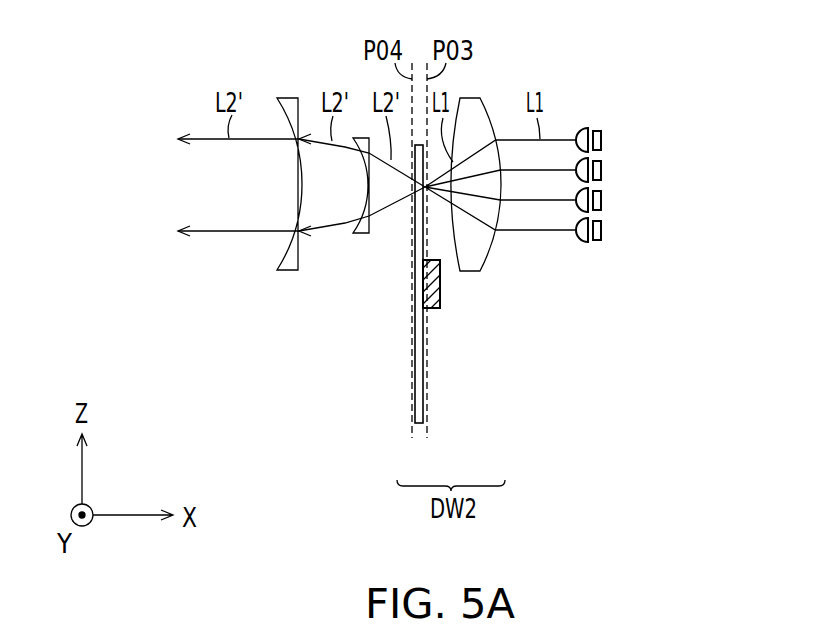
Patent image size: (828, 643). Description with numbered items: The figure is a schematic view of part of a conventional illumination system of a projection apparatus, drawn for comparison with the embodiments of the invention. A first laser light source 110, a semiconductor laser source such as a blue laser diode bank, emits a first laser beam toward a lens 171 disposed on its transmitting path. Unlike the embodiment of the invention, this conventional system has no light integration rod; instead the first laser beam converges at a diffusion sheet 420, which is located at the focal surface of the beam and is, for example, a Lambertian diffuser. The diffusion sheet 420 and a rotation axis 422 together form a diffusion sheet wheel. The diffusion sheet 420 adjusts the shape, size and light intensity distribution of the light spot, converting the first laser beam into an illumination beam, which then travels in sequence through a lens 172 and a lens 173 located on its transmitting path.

The first laser light source 110 is at (582, 242).
The lens 171 is at (482, 253).
The lens 172 is at (360, 233).
The lens 173 is at (288, 258).
The diffusion sheet 420 is at (418, 424).
The rotation axis 422 is at (431, 308).